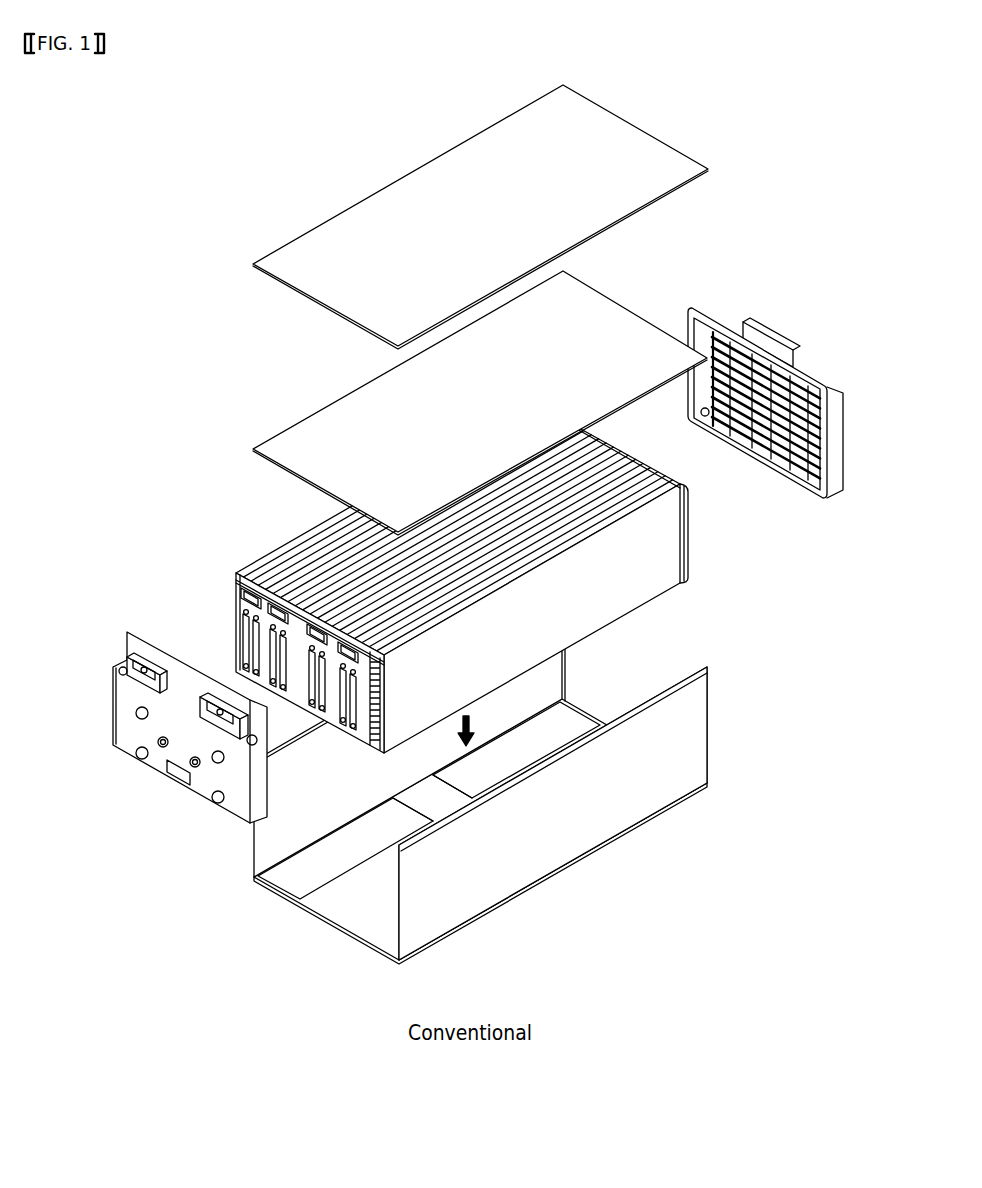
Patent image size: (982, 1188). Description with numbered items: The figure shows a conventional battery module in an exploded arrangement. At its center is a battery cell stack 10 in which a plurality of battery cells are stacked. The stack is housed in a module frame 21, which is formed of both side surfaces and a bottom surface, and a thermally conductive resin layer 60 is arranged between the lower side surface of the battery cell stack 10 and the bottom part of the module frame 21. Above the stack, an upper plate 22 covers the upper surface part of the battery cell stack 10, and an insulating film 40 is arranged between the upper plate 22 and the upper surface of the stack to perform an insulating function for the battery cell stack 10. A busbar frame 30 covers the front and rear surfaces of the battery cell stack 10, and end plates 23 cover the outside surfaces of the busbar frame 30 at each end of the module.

The battery cell stack 10 is at (428, 577).
The module frame 21 is at (557, 843).
The upper plate 22 is at (363, 229).
The end plate 23 is at (163, 758).
The busbar frame 30 is at (240, 591).
The insulating film 40 is at (341, 424).
The thermally conductive resin layer 60 is at (352, 893).